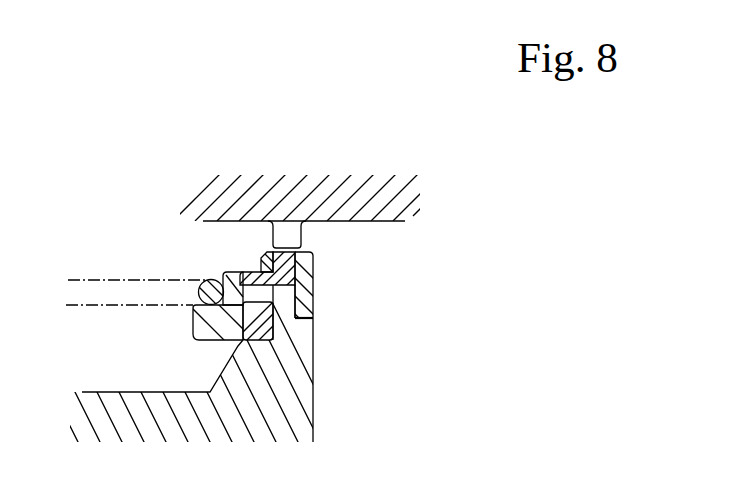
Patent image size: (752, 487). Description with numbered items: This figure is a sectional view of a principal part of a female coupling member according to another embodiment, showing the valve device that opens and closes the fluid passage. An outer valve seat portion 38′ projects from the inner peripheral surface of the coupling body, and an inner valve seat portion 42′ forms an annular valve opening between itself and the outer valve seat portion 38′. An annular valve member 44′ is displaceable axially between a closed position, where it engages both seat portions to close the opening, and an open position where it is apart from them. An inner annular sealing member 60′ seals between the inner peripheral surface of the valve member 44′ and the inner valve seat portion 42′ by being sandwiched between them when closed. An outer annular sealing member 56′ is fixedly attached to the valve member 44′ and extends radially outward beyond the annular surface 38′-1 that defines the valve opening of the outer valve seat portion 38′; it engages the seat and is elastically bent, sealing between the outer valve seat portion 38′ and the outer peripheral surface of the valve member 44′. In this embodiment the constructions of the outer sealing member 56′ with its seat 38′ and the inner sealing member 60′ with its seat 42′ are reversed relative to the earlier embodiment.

The outer valve seat portion 38′ is at (300, 236).
The annular surface 38′-1 is at (318, 263).
The outer annular sealing member 56′ is at (300, 281).
The annular valve member 44′ is at (295, 309).
The inner annular sealing member 60′ is at (283, 338).
The inner valve seat portion 42′ is at (288, 414).